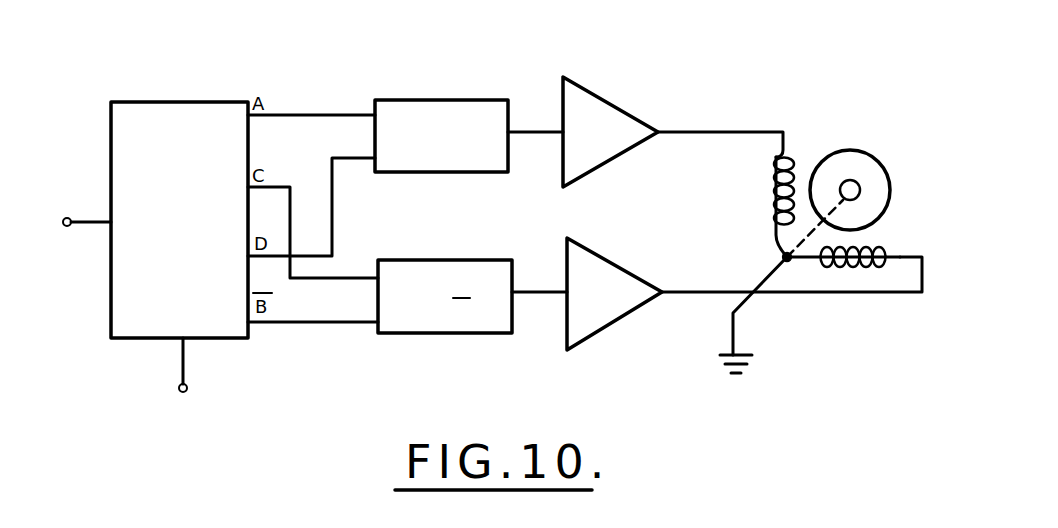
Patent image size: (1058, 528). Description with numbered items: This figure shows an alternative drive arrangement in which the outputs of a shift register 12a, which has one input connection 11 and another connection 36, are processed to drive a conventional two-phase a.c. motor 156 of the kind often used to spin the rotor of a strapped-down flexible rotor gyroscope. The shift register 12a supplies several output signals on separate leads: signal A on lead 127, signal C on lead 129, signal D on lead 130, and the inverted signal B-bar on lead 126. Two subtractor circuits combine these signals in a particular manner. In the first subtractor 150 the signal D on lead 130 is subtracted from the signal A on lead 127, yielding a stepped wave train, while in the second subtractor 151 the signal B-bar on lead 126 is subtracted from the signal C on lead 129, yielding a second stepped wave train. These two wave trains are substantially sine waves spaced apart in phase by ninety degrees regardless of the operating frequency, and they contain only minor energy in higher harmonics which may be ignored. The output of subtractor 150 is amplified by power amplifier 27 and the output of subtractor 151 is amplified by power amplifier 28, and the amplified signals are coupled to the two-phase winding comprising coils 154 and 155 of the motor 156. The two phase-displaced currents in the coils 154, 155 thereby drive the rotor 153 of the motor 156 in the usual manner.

The data input terminal 11 is at (80, 221).
The shift register 12a is at (111, 317).
The clock input terminal 36 is at (182, 362).
The lead 127 is at (315, 115).
The lead 129 is at (290, 187).
The lead 130 is at (332, 215).
The lead 126 is at (313, 323).
The subtractor 150 is at (445, 100).
The subtractor 151 is at (440, 335).
The power amplifier 27 is at (610, 98).
The power amplifier 28 is at (615, 263).
The coil 154 is at (770, 197).
The rotor 153 is at (886, 163).
The coil 155 is at (890, 245).
The a.c. motor 156 is at (850, 134).